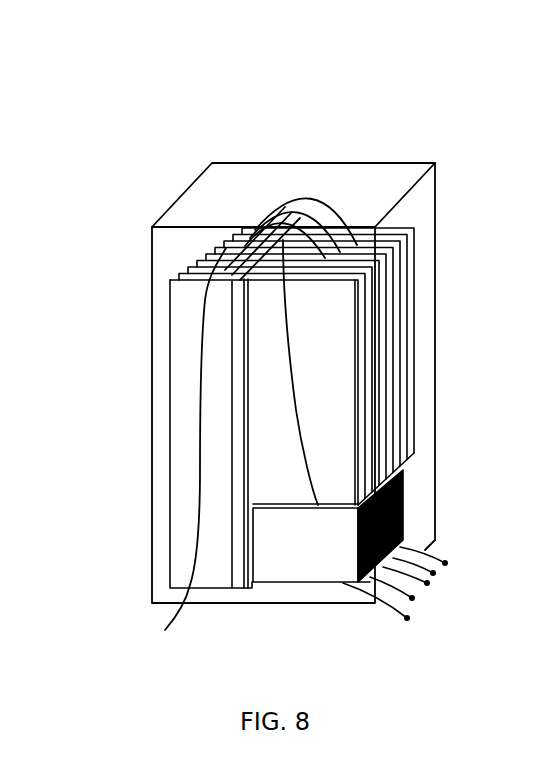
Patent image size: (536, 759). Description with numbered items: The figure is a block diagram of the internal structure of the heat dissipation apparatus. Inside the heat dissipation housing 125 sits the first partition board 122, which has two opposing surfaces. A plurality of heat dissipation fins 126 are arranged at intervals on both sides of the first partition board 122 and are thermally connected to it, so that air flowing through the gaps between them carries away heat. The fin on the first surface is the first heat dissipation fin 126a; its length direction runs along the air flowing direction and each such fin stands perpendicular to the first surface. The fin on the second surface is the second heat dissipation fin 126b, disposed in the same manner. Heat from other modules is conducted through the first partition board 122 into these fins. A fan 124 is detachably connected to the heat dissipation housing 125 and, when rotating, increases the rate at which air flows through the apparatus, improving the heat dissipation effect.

The heat dissipation housing 125 is at (187, 190).
The first partition board 122 is at (246, 413).
The fan 124 is at (280, 553).
The heat dissipation fins 126 is at (380, 78).
The first heat dissipation fin 126a is at (226, 248).
The second heat dissipation fin 126b is at (352, 240).